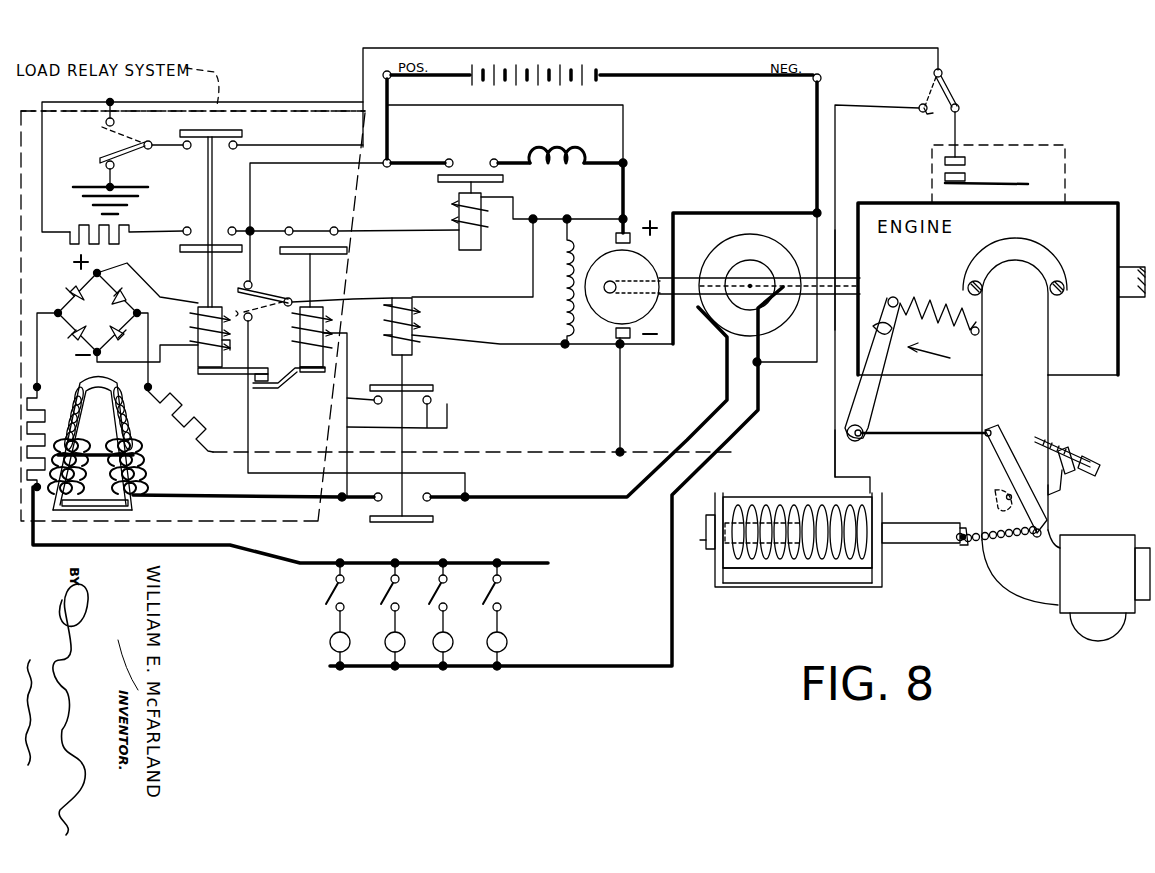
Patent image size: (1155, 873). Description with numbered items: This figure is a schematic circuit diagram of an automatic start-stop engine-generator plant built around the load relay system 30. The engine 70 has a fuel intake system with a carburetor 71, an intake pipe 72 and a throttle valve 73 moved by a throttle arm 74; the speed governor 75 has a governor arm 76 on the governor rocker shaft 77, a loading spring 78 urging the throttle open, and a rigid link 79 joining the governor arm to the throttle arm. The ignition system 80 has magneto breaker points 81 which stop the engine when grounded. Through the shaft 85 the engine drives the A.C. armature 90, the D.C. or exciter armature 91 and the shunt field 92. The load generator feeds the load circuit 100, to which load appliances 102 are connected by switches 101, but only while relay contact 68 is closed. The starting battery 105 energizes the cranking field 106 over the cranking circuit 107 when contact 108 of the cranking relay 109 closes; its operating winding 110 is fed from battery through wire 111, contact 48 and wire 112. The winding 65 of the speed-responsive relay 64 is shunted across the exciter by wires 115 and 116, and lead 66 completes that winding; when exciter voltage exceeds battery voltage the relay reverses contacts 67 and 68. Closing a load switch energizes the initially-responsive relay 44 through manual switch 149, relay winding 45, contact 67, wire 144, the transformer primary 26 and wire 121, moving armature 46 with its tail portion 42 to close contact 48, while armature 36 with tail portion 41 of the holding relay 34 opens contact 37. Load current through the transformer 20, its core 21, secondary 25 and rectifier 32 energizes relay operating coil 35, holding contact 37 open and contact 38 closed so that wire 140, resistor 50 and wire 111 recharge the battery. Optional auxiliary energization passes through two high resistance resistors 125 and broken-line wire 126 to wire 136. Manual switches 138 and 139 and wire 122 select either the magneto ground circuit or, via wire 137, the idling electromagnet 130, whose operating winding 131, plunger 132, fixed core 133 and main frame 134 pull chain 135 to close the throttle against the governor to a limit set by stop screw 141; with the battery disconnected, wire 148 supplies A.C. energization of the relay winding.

The transformer 20 is at (144, 466).
The transformer core 21 is at (106, 495).
The transformer secondary winding 25 is at (130, 434).
The transformer primary winding 26 is at (140, 488).
The load relay system 30 is at (216, 110).
The rectifier 32 is at (132, 326).
The holding relay 34 is at (198, 337).
The relay operating coil 35 is at (234, 351).
The armature 36 is at (198, 370).
The relay contact 37 is at (218, 128).
The relay contact 38 is at (204, 238).
The tail portion 41 is at (232, 378).
The tail portion 42 is at (290, 378).
The initially-responsive relay 44 is at (308, 402).
The relay winding 45 is at (346, 300).
The armature 46 is at (300, 352).
The relay contact 48 is at (310, 236).
The resistor 50 is at (78, 230).
The speed-responsive relay 64 is at (411, 407).
The relay winding 65 is at (390, 316).
The relay winding lead 66 is at (388, 343).
The relay contact 67 is at (418, 390).
The relay contact 68 is at (420, 516).
The engine 70 is at (1072, 218).
The carburetor 71 is at (1115, 548).
The intake pipe 72 is at (1040, 397).
The throttle valve 73 is at (995, 495).
The throttle arm 74 is at (996, 456).
The speed governor 75 is at (940, 359).
The governor arm 76 is at (880, 402).
The governor rocker shaft 77 is at (880, 322).
The governor loading spring 78 is at (955, 322).
The rigid link 79 is at (910, 438).
The ignition system 80 is at (1066, 155).
The magneto breaker points 81 is at (967, 172).
The shaft 85 is at (842, 290).
The A.C. armature 90 is at (730, 250).
The D.C. armature 91 is at (604, 252).
The shunt field 92 is at (550, 283).
The load circuit 100 is at (583, 496).
The switches 101 is at (503, 603).
The load appliances 102 is at (507, 642).
The starting battery 105 is at (592, 72).
The cranking field 106 is at (560, 148).
The cranking circuit 107 is at (408, 163).
The relay contact 108 is at (470, 172).
The cranking relay 109 is at (452, 221).
The operating winding 110 is at (481, 222).
The wire 111 is at (250, 177).
The wire 112 is at (400, 222).
The wire 115 is at (498, 280).
The wire 116 is at (536, 344).
The wire 121 is at (800, 368).
The wire 122 is at (858, 94).
The high resistance resistors 125 is at (58, 418).
The wire 126 is at (236, 466).
The idling electromagnet 130 is at (804, 602).
The operating winding 131 is at (800, 515).
The plunger 132 is at (918, 546).
The fixed core 133 is at (700, 545).
The main frame 134 is at (868, 588).
The chain 135 is at (1012, 545).
The wire 136 is at (622, 394).
The wire 137 is at (833, 430).
The manual switch 138 is at (950, 94).
The manual switch 139 is at (108, 155).
The wire 140 is at (455, 108).
The stop screw 141 is at (1052, 448).
The wire 144 is at (449, 421).
The wire 148 is at (252, 433).
The manual switch 149 is at (255, 293).